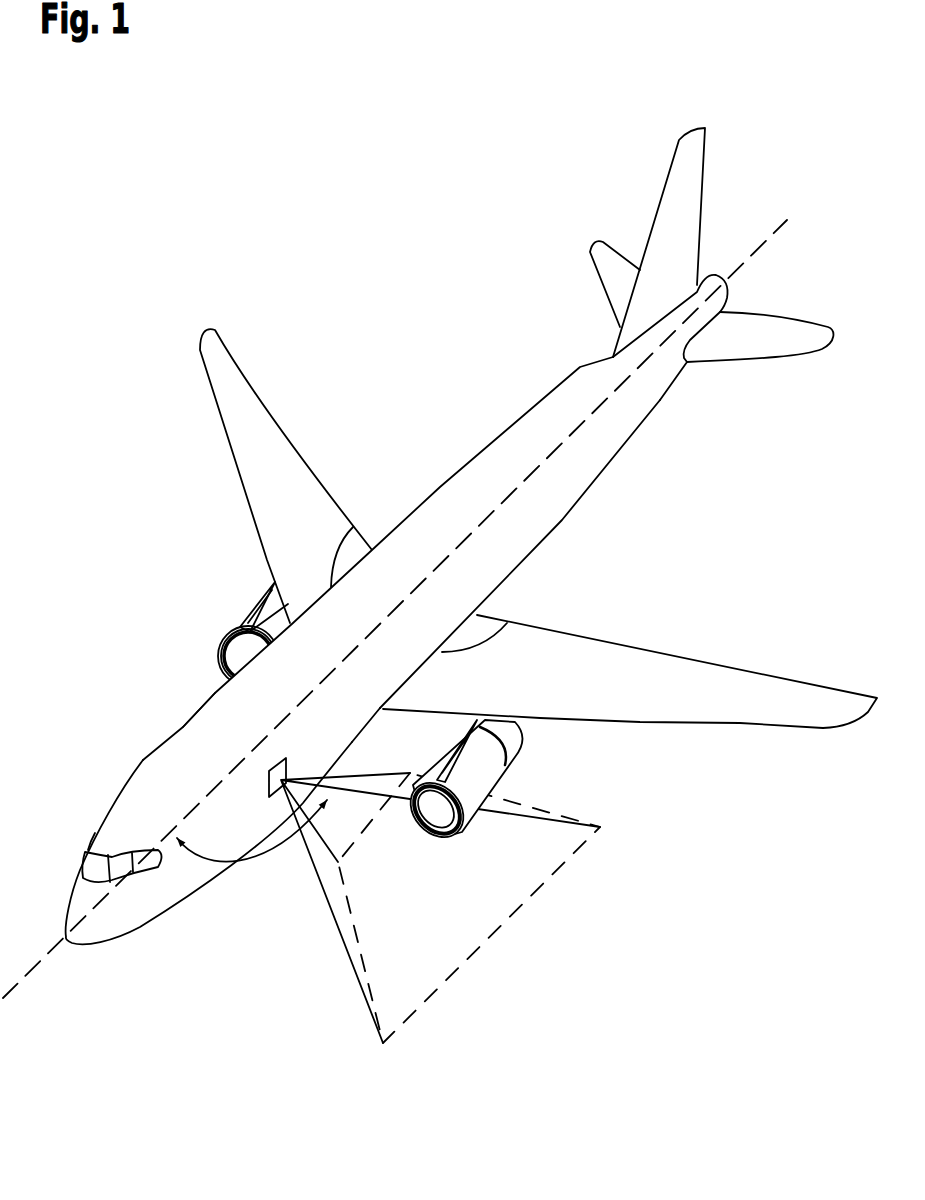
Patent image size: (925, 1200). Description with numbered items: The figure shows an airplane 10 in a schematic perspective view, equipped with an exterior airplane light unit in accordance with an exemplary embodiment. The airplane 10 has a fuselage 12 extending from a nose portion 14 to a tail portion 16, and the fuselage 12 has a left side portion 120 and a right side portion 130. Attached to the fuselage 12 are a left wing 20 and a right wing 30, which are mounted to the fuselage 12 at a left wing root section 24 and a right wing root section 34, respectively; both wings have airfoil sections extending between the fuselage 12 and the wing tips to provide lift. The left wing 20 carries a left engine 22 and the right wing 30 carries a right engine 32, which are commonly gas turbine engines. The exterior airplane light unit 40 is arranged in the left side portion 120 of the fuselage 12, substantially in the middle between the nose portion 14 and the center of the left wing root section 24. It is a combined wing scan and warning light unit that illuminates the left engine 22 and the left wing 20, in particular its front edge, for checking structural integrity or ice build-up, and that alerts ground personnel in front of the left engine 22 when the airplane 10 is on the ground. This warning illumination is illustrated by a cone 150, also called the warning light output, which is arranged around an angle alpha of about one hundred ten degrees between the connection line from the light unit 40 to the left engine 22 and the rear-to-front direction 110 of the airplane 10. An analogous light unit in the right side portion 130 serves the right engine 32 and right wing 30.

The airplane 10 is at (355, 203).
The fuselage 12 is at (550, 387).
The nose portion 14 is at (70, 947).
The tail portion 16 is at (723, 243).
The left wing 20 is at (653, 650).
The left engine 22 is at (437, 840).
The left wing root section 24 is at (513, 620).
The right wing 30 is at (273, 417).
The right engine 32 is at (233, 632).
The right wing root section 34 is at (353, 527).
The exterior airplane light unit 40 is at (272, 770).
The rear-to-front direction 110 is at (10, 993).
The left side portion 120 is at (327, 737).
The right side portion 130 is at (215, 693).
The cone 150 is at (357, 978).